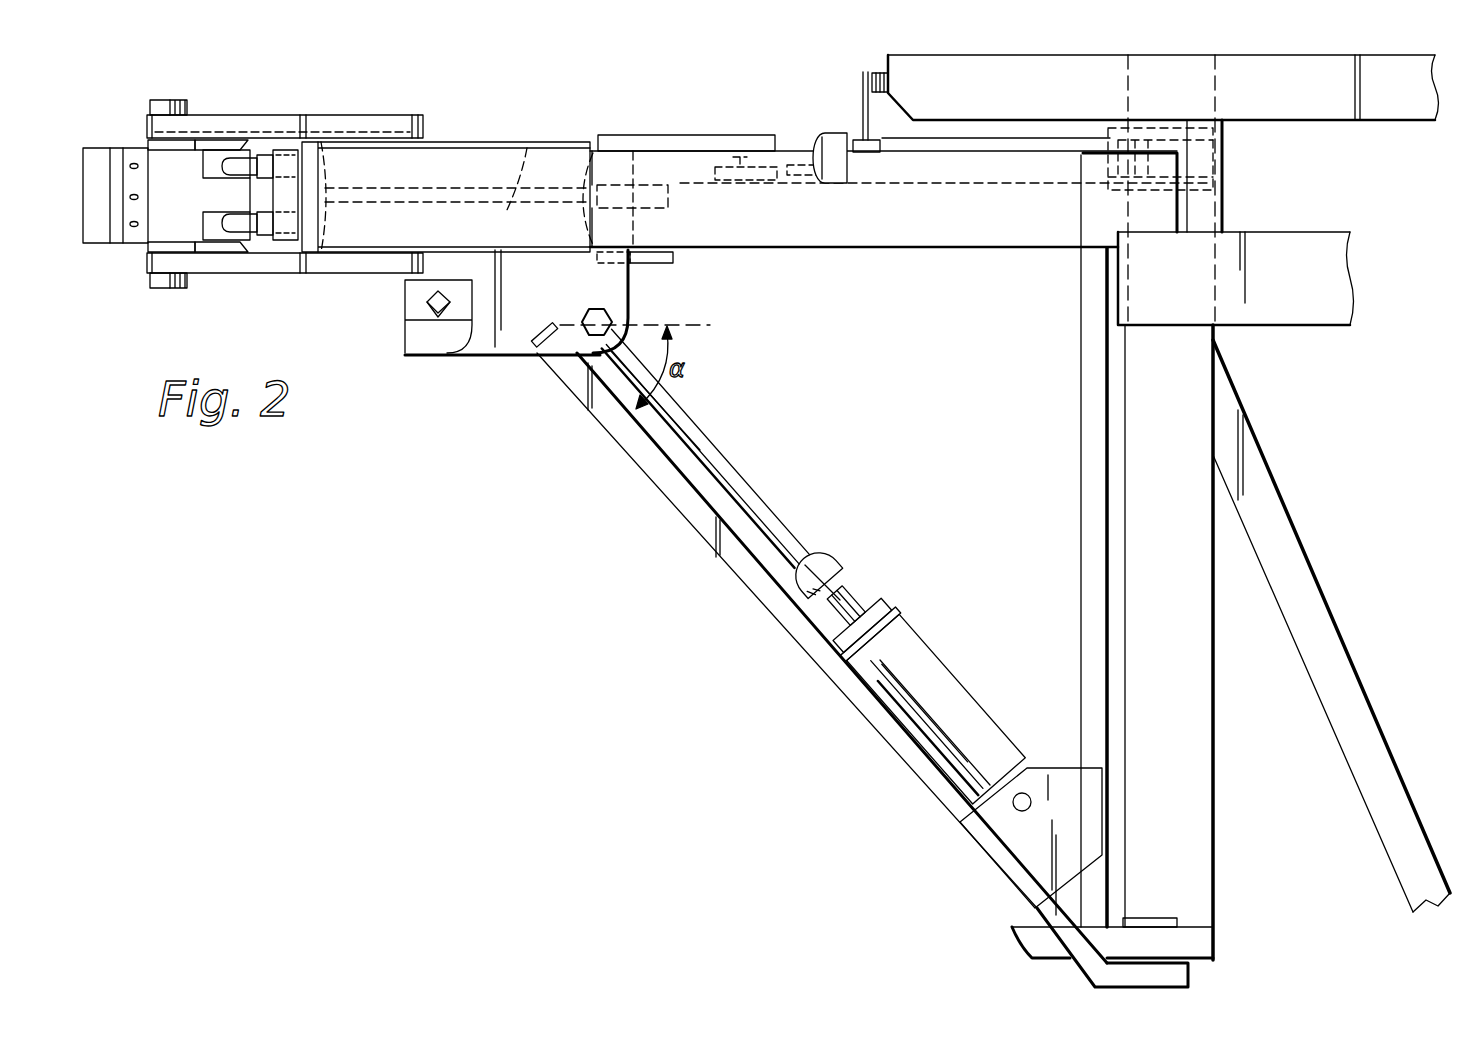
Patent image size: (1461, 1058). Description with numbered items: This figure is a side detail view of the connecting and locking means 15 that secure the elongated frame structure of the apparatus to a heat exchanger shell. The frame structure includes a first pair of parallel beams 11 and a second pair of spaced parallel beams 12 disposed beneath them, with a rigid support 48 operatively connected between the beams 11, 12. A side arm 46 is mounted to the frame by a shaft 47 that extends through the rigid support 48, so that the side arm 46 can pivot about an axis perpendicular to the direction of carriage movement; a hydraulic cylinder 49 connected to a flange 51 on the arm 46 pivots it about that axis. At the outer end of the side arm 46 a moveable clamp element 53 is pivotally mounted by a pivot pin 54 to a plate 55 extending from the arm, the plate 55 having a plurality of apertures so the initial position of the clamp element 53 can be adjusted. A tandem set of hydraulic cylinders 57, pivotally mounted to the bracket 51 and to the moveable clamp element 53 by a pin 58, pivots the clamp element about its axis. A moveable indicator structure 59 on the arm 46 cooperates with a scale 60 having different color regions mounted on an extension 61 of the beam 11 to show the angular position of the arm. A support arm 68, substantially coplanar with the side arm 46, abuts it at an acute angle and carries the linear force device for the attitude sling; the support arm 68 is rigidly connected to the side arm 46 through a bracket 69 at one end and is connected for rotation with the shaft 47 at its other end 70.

The first pair of parallel beams 11 is at (1320, 108).
The second pair of spaced parallel beams 12 is at (1210, 927).
The connecting and locking means 15 is at (410, 428).
The side arm 46 is at (783, 238).
The shaft 47 is at (1195, 112).
The rigid support 48 is at (1080, 512).
The hydraulic cylinder 49 is at (1023, 157).
The flange 51 is at (693, 143).
The moveable clamp element 53 is at (102, 234).
The pivot pin 54 is at (168, 289).
The plate 55 is at (303, 100).
The tandem set of hydraulic cylinders 57 is at (516, 143).
The pin 58 is at (217, 158).
The moveable indicator structure 59 is at (863, 112).
The scale 60 is at (873, 73).
The extension of the beam 61 is at (985, 112).
The support arm 68 is at (778, 620).
The bracket 69 is at (517, 348).
The other end of the support arm 70 is at (1173, 980).